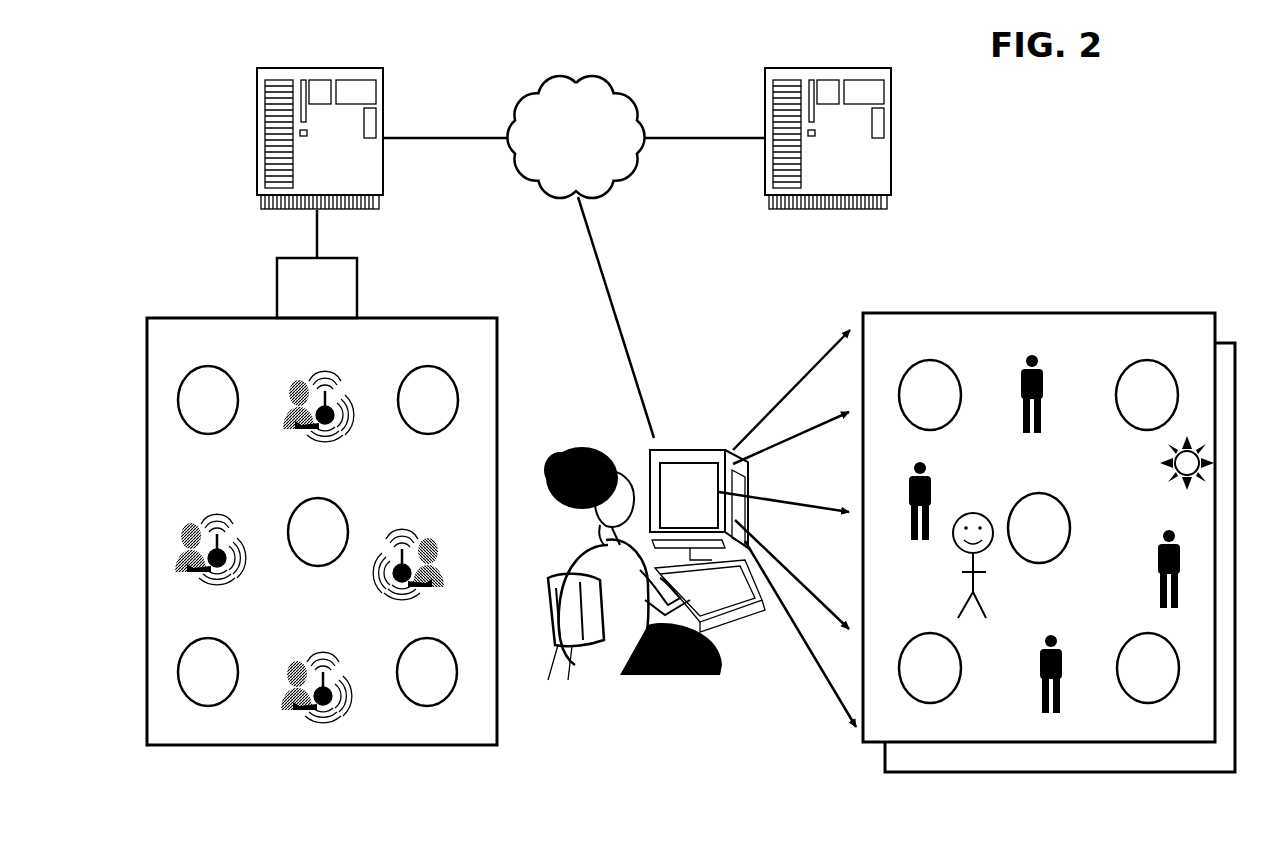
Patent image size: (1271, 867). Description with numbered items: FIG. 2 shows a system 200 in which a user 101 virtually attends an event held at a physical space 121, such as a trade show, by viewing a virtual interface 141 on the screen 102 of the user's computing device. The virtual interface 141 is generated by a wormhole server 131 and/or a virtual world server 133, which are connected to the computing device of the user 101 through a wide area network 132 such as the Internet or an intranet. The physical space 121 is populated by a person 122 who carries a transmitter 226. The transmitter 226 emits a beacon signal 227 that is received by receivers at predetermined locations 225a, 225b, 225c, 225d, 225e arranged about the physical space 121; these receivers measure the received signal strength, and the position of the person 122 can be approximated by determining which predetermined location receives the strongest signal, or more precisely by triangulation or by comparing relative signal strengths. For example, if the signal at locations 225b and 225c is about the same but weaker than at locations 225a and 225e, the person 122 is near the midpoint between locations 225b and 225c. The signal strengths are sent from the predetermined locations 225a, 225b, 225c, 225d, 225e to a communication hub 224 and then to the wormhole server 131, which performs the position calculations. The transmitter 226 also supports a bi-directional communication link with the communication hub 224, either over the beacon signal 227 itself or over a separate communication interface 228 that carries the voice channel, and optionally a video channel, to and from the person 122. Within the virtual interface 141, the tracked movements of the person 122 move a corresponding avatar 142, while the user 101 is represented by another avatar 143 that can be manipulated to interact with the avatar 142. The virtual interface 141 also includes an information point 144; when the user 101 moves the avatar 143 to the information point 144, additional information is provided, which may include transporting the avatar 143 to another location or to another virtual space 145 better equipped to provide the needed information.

The system 200 is at (1048, 79).
The user 101 is at (602, 680).
The screen 102 is at (707, 541).
The physical space 121 is at (188, 318).
The person 122 is at (440, 548).
The wormhole server 131 is at (257, 165).
The wide area network 132 is at (575, 137).
The virtual world server 133 is at (891, 148).
The virtual interface 141 is at (1080, 313).
The avatar 142 is at (1154, 548).
The avatar 143 is at (974, 513).
The information point 144 is at (1166, 479).
The virtual space 145 is at (1230, 343).
The communication hub 224 is at (317, 288).
The predetermined location 225a is at (208, 400).
The predetermined location 225b is at (428, 400).
The predetermined location 225c is at (318, 532).
The predetermined location 225d is at (208, 672).
The predetermined location 225e is at (427, 672).
The transmitter 226 is at (390, 585).
The beacon signal 227 is at (397, 602).
The communication interface 228 is at (406, 532).